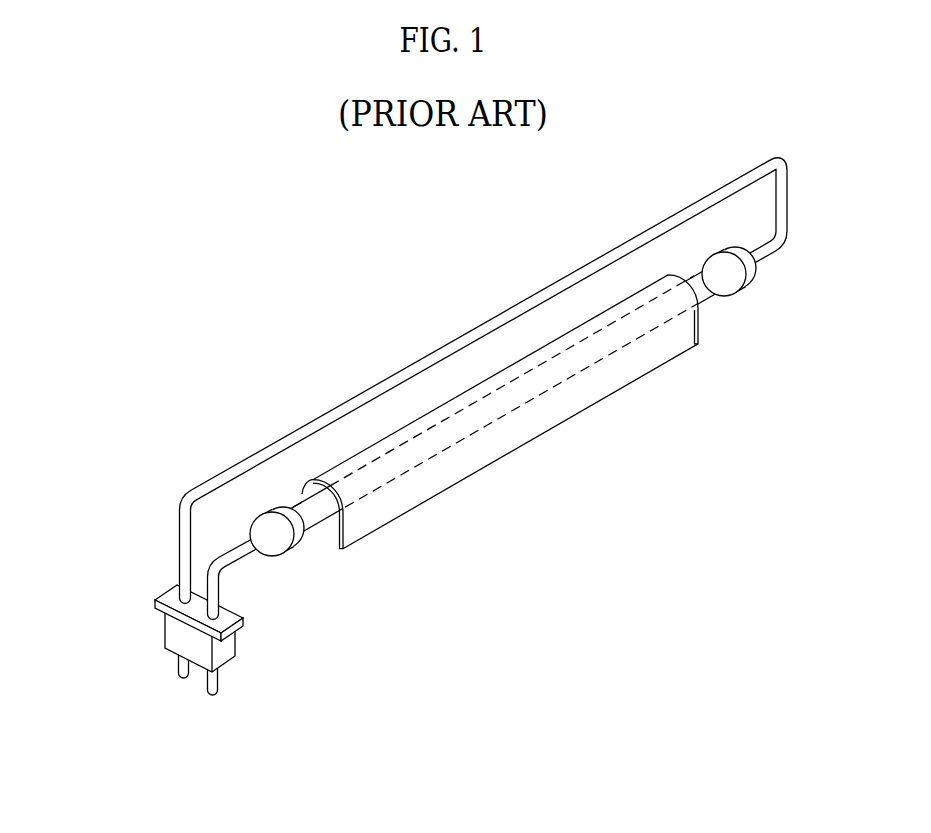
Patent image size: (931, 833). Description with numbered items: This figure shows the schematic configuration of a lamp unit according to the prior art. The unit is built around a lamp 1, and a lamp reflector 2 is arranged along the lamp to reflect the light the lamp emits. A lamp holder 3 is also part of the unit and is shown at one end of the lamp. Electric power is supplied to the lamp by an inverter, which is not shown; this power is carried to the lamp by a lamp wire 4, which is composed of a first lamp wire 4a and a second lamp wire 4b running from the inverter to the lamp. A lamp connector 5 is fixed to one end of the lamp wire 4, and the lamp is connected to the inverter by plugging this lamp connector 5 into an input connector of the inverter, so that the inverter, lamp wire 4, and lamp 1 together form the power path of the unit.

The lamp 1 is at (708, 293).
The lamp reflector 2 is at (517, 433).
The lamp holder 3 is at (293, 543).
The lamp wire 4 is at (427, 388).
The first lamp wire 4a is at (185, 527).
The second lamp wire 4b is at (213, 583).
The lamp connector 5 is at (223, 653).